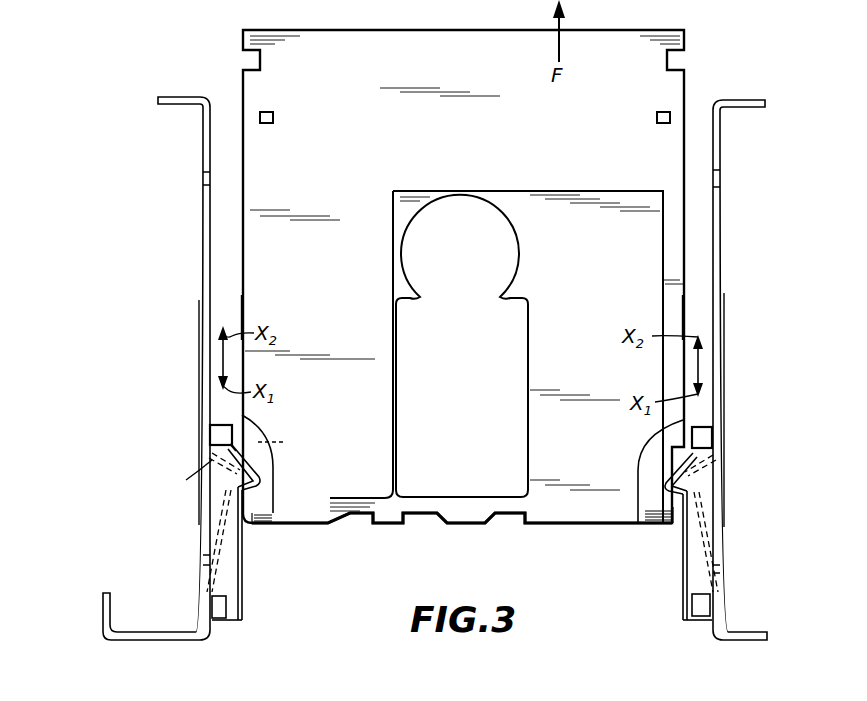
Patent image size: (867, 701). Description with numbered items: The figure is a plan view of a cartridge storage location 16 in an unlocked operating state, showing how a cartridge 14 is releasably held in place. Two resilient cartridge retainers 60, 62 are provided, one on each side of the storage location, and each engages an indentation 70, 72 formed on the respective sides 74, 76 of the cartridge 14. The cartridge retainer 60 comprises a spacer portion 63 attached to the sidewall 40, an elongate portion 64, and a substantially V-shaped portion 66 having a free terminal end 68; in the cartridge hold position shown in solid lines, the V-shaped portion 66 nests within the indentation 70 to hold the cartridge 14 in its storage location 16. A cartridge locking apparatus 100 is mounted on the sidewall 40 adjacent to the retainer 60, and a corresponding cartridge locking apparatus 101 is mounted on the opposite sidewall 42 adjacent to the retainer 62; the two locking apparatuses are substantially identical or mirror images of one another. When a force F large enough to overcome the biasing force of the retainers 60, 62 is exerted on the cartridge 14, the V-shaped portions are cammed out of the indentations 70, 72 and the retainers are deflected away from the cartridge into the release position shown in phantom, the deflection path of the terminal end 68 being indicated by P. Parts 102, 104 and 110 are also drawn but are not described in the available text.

The cartridge 14 is at (250, 200).
The cartridge storage location 16 is at (128, 147).
The sidewall 40 is at (205, 268).
The sidewall 42 is at (720, 225).
The resilient cartridge retainer 60 is at (242, 600).
The resilient cartridge retainer 62 is at (685, 600).
The spacer portion 63 is at (224, 622).
The elongate portion 64 is at (228, 572).
The substantially V-shaped portion 66 is at (262, 478).
The free terminal end 68 is at (233, 449).
The indentation 70 is at (258, 521).
The indentation 72 is at (667, 500).
The side of the cartridge 74 is at (240, 313).
The side of the cartridge 76 is at (683, 318).
The cartridge locking apparatus 100 is at (152, 436).
The cartridge locking apparatus 101 is at (724, 370).
The left plate 102 is at (199, 372).
The left tab 104 is at (220, 420).
The right tab 110 is at (703, 425).